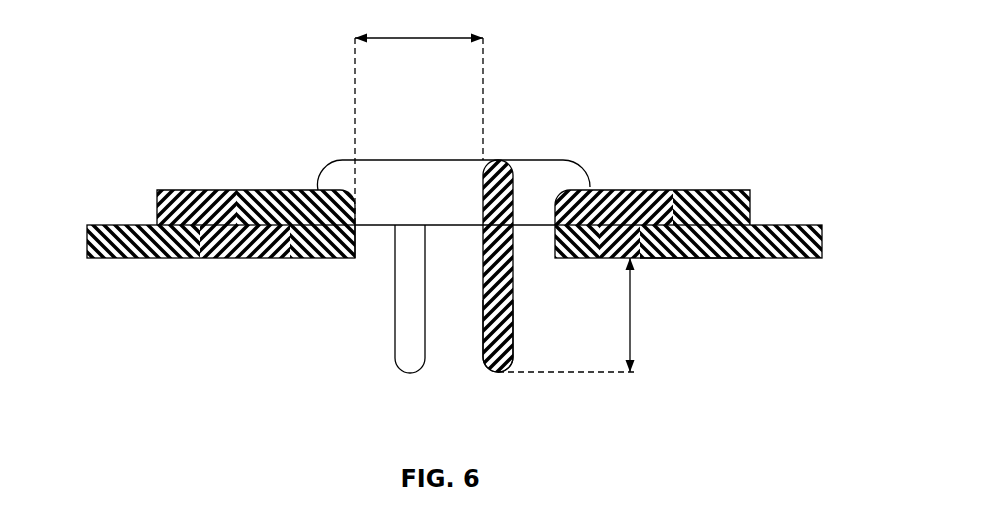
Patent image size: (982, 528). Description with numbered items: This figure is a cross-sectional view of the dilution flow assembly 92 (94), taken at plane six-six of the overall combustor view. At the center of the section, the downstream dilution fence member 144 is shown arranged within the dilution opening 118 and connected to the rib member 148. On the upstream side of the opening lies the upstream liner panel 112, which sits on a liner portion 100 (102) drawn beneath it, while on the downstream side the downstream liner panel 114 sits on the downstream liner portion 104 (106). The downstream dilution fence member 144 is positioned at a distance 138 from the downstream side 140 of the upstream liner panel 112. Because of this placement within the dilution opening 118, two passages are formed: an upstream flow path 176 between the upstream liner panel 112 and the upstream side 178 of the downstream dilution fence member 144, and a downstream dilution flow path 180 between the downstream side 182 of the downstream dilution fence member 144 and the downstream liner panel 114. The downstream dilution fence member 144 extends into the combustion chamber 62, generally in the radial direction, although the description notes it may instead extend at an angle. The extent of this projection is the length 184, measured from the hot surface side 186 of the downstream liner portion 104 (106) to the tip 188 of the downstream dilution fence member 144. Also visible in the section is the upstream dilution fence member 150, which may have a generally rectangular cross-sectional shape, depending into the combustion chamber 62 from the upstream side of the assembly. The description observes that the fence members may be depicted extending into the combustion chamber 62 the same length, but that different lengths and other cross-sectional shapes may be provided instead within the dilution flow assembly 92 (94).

The combustion chamber 62 is at (218, 397).
The dilution flow assembly 92 is at (765, 69).
The dilution flow assembly 94 is at (716, 77).
The first substrate 100 is at (193, 260).
The first substrate layer 102 is at (165, 258).
The downstream liner portion 104 is at (700, 260).
The downstream liner portion 106 is at (708, 258).
The upstream liner panel 112 is at (176, 190).
The downstream liner panel 114 is at (653, 190).
The dilution opening 118 is at (411, 202).
The distance 138 is at (413, 43).
The downstream side 140 is at (357, 256).
The downstream dilution fence member 144 is at (508, 305).
The rib member 148 is at (540, 258).
The upstream dilution fence member 150 is at (398, 320).
The upstream flow path 176 is at (460, 260).
The upstream side 178 is at (470, 349).
The downstream dilution flow path 180 is at (520, 160).
The downstream side 182 is at (528, 333).
The length 184 is at (634, 290).
The hot surface side 186 is at (700, 277).
The tip 188 is at (496, 386).